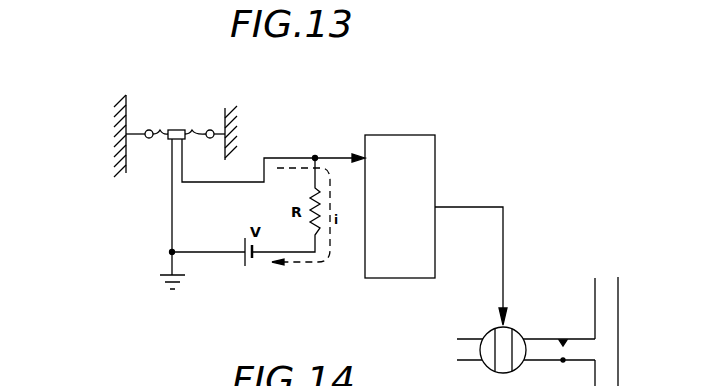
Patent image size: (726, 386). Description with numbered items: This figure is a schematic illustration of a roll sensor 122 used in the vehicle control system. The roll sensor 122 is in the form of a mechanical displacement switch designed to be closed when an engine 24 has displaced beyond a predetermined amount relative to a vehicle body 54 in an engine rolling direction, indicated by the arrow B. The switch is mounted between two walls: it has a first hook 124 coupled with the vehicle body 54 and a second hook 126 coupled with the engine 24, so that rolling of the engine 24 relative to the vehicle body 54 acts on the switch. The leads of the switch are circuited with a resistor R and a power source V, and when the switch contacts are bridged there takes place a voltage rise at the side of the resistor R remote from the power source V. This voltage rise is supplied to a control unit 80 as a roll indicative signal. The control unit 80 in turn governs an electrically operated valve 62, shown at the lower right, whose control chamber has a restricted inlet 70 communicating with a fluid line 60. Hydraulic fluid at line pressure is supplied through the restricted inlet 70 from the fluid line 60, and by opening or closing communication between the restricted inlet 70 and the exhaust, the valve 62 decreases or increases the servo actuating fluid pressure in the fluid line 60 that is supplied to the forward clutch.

The engine 24 is at (120, 143).
The vehicle body 54 is at (232, 124).
The roll sensor 122 is at (180, 128).
The first hook 124 is at (203, 128).
The second hook 126 is at (152, 128).
The control unit 80 is at (415, 135).
The electrically operated valve 62 is at (518, 330).
The restricted inlet 70 is at (572, 347).
The fluid line 60 is at (617, 353).